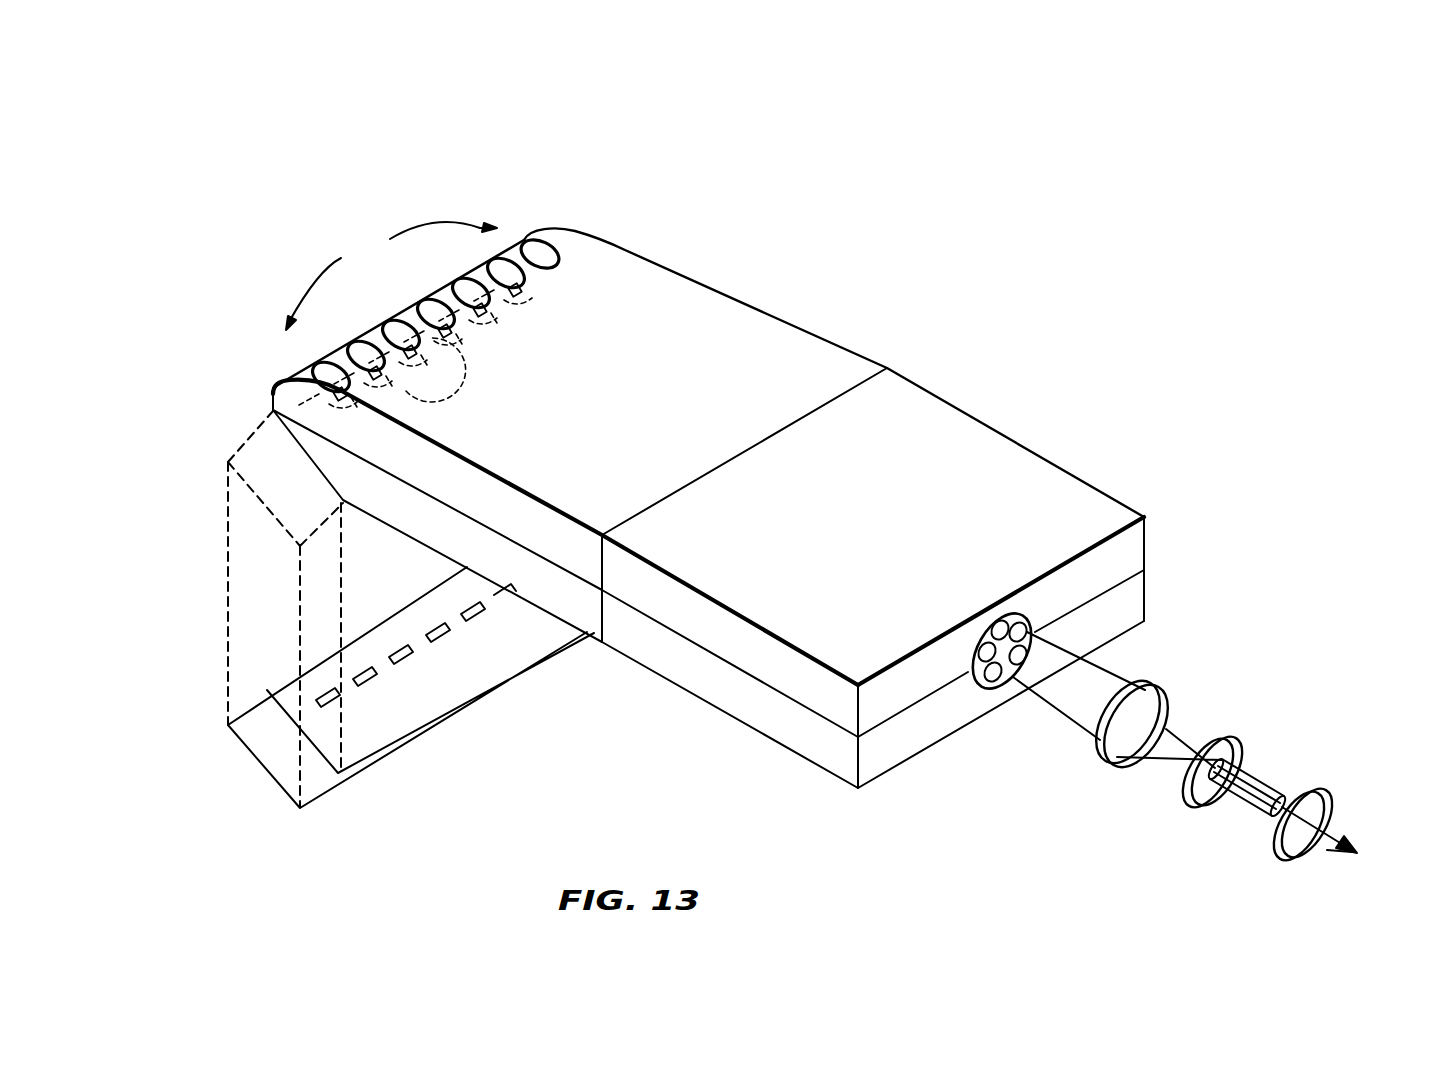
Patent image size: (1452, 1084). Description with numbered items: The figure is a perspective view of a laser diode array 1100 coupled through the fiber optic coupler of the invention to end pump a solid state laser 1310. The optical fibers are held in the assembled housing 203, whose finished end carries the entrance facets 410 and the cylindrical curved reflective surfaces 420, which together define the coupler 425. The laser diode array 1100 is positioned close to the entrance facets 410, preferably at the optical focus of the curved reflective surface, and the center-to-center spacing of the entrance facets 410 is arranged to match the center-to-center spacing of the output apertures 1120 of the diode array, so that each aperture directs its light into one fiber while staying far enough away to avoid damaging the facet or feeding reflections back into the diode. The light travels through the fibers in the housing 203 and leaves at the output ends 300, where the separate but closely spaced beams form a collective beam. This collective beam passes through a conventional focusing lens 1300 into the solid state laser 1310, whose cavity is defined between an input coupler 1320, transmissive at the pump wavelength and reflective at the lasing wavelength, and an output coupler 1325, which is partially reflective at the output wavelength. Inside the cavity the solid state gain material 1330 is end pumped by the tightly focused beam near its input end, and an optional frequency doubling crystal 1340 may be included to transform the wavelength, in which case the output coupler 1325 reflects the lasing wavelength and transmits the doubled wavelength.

The housing 203 is at (905, 296).
The cylindrical curved reflective surfaces 420 is at (523, 238).
The coupler 425 is at (391, 276).
The entrance facets 410 is at (458, 378).
The laser diode array 1100 is at (258, 722).
The output apertures 1120 is at (398, 656).
The output ends 300 is at (980, 696).
The focusing lens 1300 is at (1148, 682).
The solid state laser 1310 is at (1323, 620).
The input coupler 1320 is at (1224, 742).
The output coupler 1325 is at (1316, 790).
The solid state gain material 1330 is at (1220, 781).
The frequency doubling crystal 1340 is at (1248, 793).